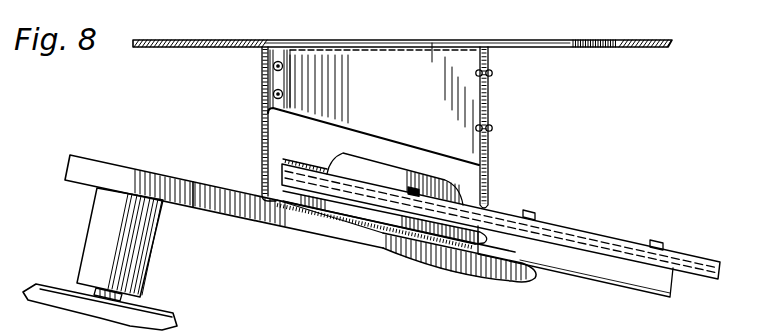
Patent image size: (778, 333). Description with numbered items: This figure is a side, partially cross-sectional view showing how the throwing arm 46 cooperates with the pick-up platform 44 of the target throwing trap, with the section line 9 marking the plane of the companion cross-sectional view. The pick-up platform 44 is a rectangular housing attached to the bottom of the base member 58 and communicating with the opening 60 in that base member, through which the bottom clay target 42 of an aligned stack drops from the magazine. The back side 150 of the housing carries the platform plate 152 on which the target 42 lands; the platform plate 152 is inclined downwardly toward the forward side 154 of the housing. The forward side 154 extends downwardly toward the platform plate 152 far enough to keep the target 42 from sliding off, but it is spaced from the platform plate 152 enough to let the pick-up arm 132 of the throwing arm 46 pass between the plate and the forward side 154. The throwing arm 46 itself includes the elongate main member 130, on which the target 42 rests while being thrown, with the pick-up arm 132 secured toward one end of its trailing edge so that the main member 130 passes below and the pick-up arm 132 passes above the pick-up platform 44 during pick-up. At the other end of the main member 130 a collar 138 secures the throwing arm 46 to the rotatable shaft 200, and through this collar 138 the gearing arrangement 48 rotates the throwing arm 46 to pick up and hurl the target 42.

The section line 9- 9 is at (223, 125).
The clay target 42 is at (352, 155).
The pick-up platform 44 is at (498, 94).
The throwing arm 46 is at (609, 236).
The gearing arrangement 48 is at (50, 287).
The base member 58 is at (642, 38).
The opening 60 is at (423, 40).
The main member 130 is at (503, 270).
The pick-up arm 132 is at (500, 219).
The collar 138 is at (140, 228).
The back side 150 is at (262, 84).
The platform plate 152 is at (383, 218).
The forward side 154 is at (497, 168).
The rotatable shaft 200 is at (143, 285).